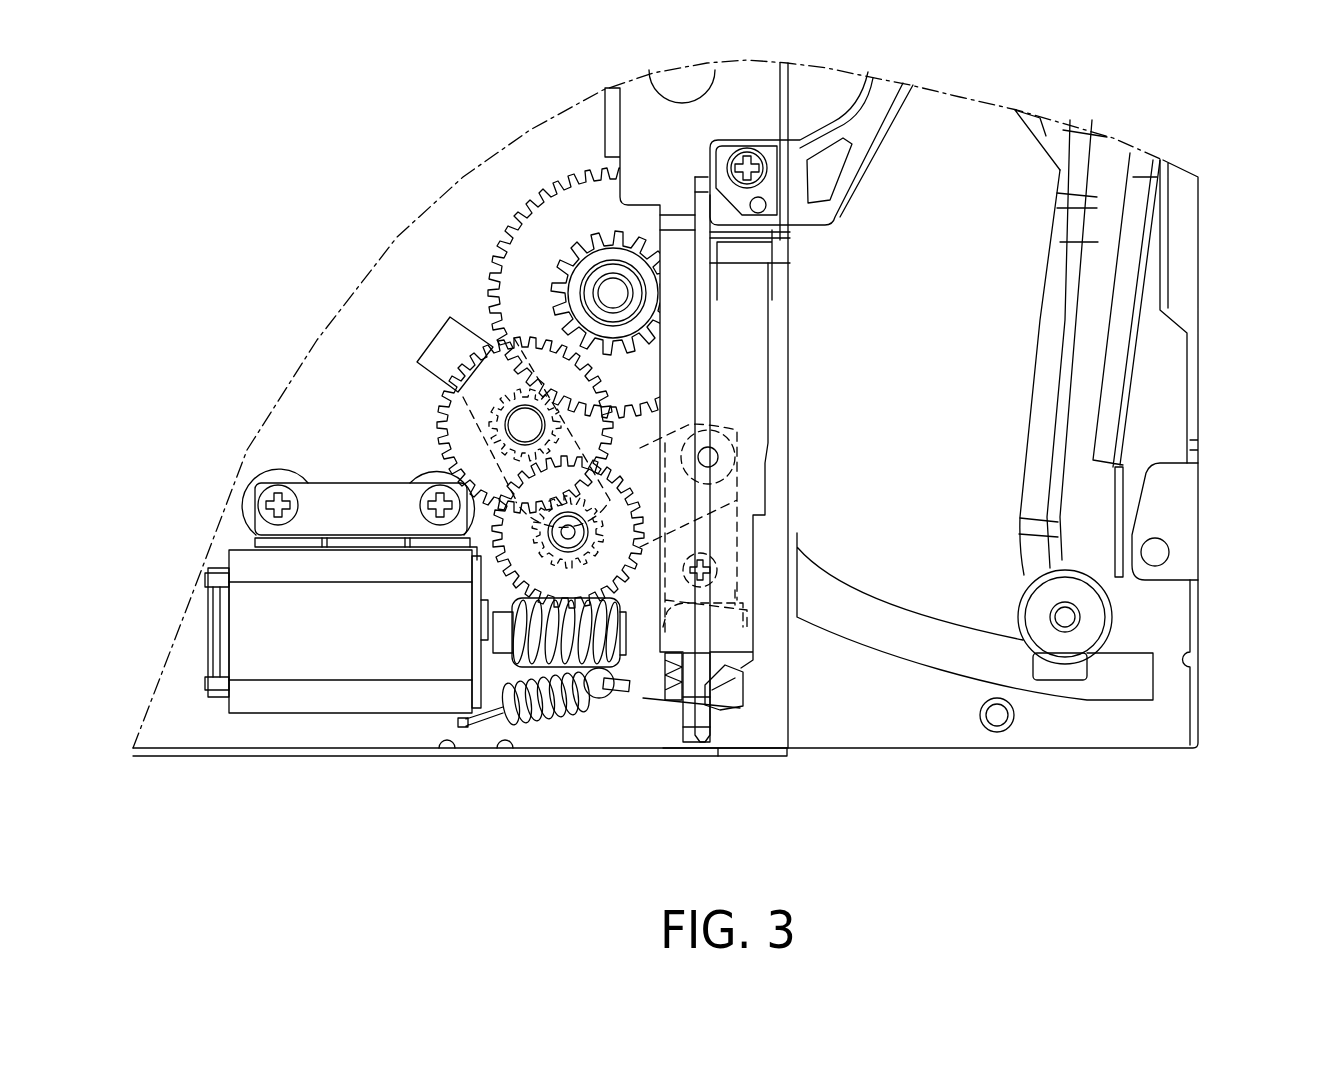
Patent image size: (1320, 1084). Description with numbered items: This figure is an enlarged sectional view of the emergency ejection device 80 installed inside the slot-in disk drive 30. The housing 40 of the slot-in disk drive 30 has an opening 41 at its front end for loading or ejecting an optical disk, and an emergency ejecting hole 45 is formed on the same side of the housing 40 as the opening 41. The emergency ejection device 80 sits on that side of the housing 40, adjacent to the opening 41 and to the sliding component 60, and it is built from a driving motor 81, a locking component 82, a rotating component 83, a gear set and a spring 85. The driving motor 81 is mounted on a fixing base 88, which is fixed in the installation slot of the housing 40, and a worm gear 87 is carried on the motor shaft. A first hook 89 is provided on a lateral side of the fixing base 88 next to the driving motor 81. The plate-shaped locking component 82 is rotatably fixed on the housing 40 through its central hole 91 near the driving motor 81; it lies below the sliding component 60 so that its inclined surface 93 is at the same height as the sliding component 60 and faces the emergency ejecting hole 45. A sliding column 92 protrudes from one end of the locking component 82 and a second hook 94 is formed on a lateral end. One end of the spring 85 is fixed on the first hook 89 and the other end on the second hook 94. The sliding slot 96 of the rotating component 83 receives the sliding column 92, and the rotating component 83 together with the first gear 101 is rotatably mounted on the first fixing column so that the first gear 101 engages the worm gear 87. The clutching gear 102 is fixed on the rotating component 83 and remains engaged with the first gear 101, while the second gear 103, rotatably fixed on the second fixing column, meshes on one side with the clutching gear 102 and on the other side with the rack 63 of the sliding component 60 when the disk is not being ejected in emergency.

The slot-in disk drive 30 is at (1232, 483).
The housing 40 is at (842, 745).
The opening 41 is at (405, 755).
The emergency ejecting hole 45 is at (718, 757).
The sliding component 60 is at (775, 316).
The rack 63 is at (665, 683).
The emergency ejection device 80 is at (262, 258).
The driving motor 81 is at (290, 714).
The locking component 82 is at (662, 610).
The rotating component 83 is at (480, 352).
The spring 85 is at (556, 735).
The worm gear 87 is at (492, 630).
The fixing base 88 is at (258, 537).
The first hook 89 is at (490, 725).
The central hole 91 is at (720, 565).
The sliding column 92 is at (708, 458).
The inclined surface 93 is at (740, 708).
The second hook 94 is at (665, 612).
The sliding slot 96 is at (723, 488).
The first gear 101 is at (490, 588).
The clutching gear 102 is at (480, 343).
The second gear 103 is at (573, 180).